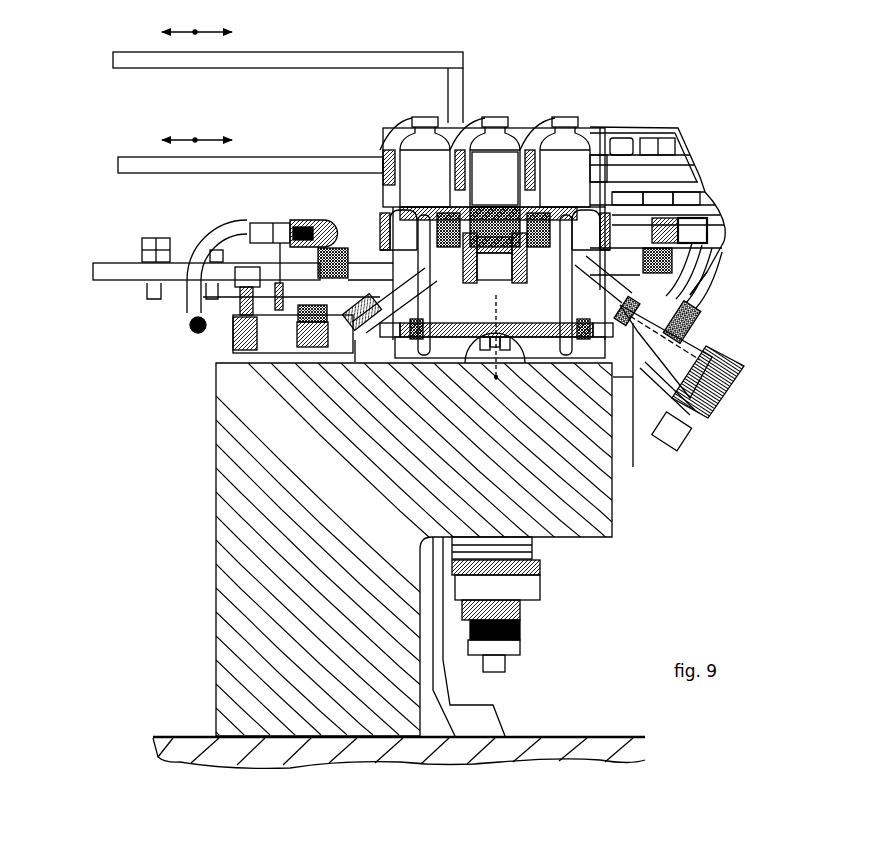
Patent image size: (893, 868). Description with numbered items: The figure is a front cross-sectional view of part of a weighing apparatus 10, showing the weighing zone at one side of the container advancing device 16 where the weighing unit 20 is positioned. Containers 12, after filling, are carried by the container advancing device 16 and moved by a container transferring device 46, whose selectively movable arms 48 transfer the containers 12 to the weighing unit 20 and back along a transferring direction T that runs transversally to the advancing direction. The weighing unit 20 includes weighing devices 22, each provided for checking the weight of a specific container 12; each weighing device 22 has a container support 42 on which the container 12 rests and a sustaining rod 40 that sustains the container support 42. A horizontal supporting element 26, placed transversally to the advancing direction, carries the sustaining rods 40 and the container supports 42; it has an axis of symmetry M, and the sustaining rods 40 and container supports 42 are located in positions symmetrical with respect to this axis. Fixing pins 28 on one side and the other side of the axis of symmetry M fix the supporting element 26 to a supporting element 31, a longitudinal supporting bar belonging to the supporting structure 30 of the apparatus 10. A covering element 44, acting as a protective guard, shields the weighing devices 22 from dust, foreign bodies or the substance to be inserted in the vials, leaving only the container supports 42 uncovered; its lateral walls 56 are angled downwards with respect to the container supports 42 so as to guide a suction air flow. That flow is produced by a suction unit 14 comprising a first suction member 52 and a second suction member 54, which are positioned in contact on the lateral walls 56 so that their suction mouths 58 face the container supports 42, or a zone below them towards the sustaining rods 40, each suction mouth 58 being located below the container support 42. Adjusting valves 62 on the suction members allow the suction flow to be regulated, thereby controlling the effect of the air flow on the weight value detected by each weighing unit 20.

The weighing apparatus 10 is at (720, 125).
The containers 12 is at (412, 121).
The suction unit 14 is at (722, 458).
The container advancing device 16 is at (497, 192).
The weighing unit 20 is at (592, 113).
The weighing device 22 is at (424, 372).
The supporting element 26 is at (537, 345).
The fixing pins 28 is at (483, 350).
The supporting structure 30 is at (245, 640).
The supporting element 31 is at (499, 385).
The sustaining rod 40 is at (433, 277).
The container support 42 is at (393, 199).
The covering element 44 is at (636, 468).
The container transferring device 46 is at (110, 115).
The arms 48 is at (300, 58).
The first suction member 52 is at (213, 347).
The second suction member 54 is at (740, 395).
The lateral walls 56 is at (363, 332).
The suction mouth 58 is at (358, 310).
The adjusting valves 62 is at (235, 305).
The axis of symmetry M is at (495, 380).
The transferring direction T is at (197, 0).